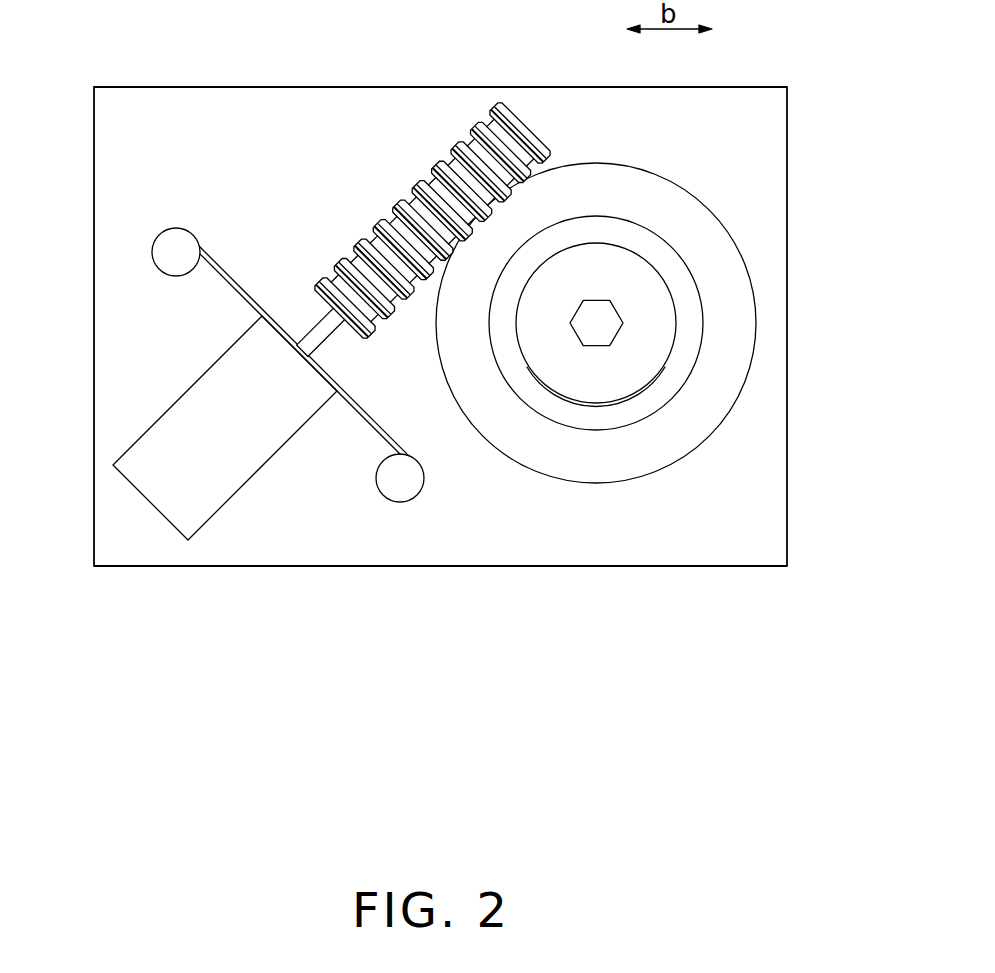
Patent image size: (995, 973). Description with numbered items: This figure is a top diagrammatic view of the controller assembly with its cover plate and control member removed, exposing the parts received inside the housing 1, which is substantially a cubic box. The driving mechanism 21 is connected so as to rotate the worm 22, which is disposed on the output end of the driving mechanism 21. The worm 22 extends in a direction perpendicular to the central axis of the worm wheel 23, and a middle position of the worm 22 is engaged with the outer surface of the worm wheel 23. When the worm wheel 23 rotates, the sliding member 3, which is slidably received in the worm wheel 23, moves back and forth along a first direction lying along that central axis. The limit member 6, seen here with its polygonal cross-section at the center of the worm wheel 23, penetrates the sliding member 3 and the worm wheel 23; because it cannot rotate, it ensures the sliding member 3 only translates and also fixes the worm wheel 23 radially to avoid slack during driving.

The housing 1 is at (325, 142).
The driving mechanism 21 is at (143, 443).
The worm 22 is at (432, 172).
The worm wheel 23 is at (707, 230).
The limit member 6 is at (610, 318).
The sliding member 3 is at (663, 328).